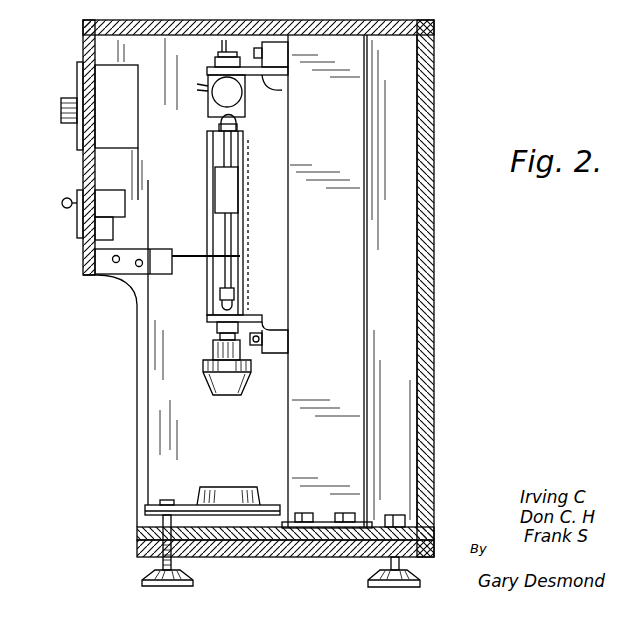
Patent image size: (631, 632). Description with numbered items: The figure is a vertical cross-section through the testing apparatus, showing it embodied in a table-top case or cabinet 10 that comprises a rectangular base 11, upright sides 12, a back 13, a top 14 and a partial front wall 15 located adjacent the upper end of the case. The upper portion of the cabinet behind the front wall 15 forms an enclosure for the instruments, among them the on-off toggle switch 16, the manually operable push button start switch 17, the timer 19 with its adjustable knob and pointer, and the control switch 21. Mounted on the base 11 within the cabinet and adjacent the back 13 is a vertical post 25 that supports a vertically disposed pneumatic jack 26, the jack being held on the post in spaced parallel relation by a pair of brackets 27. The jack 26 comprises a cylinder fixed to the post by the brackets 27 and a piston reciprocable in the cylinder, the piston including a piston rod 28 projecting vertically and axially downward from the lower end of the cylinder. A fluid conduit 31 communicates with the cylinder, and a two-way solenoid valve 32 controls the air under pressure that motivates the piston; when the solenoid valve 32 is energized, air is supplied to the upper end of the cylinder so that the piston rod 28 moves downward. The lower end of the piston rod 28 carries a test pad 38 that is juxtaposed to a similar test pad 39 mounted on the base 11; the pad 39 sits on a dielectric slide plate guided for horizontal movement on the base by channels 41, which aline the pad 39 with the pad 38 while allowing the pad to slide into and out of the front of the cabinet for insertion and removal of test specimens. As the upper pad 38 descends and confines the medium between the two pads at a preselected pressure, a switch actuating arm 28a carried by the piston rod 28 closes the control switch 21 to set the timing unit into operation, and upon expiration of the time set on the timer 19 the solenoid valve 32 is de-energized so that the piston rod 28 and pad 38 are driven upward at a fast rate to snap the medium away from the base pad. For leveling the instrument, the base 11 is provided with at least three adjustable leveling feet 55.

The case or cabinet 10 is at (135, 402).
The rectangular base 11 is at (278, 552).
The upright sides 12 is at (403, 95).
The back 13 is at (425, 232).
The top 14 is at (374, 28).
The partial front wall 15 is at (83, 46).
The on-off toggle switch 16 is at (62, 203).
The push button start switch 17 is at (77, 234).
The timer 19 is at (80, 137).
The control switch 21 is at (158, 273).
The vertical post 25 is at (338, 200).
The pneumatic jack 26 is at (213, 152).
The brackets 27 is at (283, 90).
The piston rod 28 is at (224, 337).
The switch actuating arm 28a is at (226, 186).
The fluid conduit 31 is at (228, 228).
The two-way solenoid valve 32 is at (222, 94).
The test pad 38 is at (234, 388).
The test pad 39 is at (233, 487).
The channels 41 is at (183, 505).
The adjustable leveling feet 55 is at (192, 578).